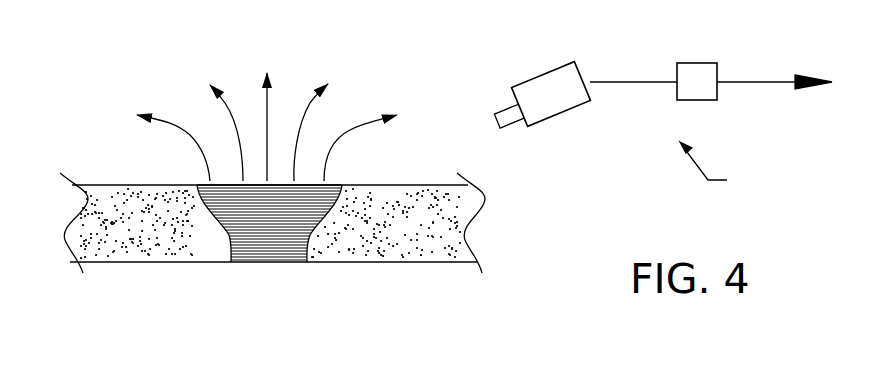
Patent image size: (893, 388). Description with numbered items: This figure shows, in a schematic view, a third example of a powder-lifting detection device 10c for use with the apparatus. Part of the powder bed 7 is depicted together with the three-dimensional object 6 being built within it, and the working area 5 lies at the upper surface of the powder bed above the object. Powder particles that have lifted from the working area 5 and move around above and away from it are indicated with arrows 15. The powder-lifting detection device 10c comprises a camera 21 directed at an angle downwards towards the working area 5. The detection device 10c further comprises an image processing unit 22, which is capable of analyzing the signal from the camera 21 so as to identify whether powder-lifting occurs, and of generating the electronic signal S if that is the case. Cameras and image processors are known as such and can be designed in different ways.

The working area 5 is at (230, 185).
The three-dimensional object 6 is at (277, 243).
The powder bed 7 is at (150, 243).
The arrows 15 is at (362, 127).
The camera 21 is at (542, 91).
The image processing unit 22 is at (695, 75).
The powder-lifting detection device 10c is at (723, 167).
The electronic signal S is at (774, 95).